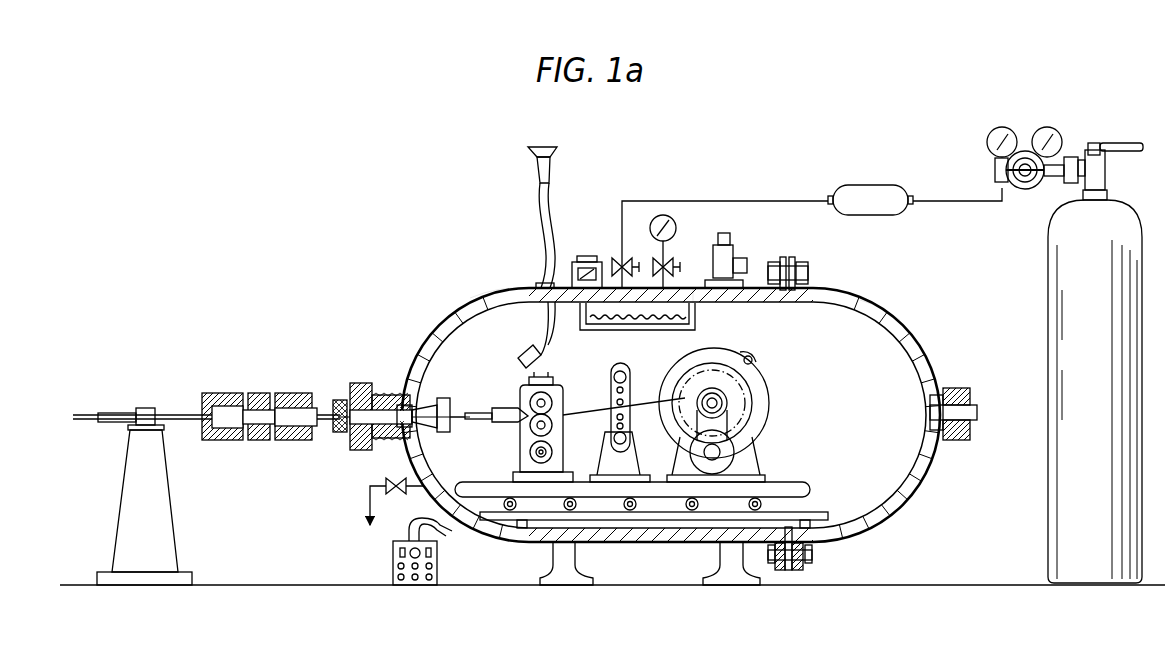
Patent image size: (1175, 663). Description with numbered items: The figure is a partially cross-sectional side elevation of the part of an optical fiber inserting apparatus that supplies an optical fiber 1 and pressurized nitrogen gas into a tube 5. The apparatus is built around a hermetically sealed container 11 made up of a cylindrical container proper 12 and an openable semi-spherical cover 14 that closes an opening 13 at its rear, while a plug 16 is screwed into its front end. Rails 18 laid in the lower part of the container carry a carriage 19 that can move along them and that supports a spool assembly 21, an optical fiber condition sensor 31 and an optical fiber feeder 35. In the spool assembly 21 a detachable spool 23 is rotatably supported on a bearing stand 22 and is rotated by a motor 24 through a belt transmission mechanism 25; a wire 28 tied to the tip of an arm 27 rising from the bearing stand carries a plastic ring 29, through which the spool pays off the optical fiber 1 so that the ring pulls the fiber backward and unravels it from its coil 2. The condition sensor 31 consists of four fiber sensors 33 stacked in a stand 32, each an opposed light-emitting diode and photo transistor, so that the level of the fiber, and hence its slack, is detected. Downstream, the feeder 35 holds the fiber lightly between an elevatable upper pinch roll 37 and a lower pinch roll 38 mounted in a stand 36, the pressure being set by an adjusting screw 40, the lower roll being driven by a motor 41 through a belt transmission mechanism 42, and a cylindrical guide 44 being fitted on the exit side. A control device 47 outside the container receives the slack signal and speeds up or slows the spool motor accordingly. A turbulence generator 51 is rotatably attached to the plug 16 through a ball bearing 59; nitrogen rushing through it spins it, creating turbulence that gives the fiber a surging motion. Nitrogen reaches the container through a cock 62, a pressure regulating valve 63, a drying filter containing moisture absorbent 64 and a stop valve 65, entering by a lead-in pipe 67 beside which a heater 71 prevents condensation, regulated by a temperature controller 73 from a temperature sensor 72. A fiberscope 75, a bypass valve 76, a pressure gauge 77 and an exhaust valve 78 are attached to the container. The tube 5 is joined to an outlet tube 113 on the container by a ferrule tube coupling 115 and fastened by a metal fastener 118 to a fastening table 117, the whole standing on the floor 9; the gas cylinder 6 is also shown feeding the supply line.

The optical fiber 1 is at (82, 413).
The coil 2 is at (680, 403).
The tube 5 is at (117, 414).
The gas cylinder 6 is at (1140, 287).
The floor 9 is at (533, 633).
The sealed container 11 is at (498, 285).
The cylindrical container proper 12 is at (470, 298).
The opening 13 is at (850, 480).
The semi-spherical cover 14 is at (860, 300).
The plug 16 is at (360, 383).
The rails 18 is at (683, 521).
The carriage 19 is at (800, 488).
The spool assembly 21 is at (735, 398).
The bearing stand 22 is at (690, 458).
The spool 23 is at (716, 388).
The motor 24 is at (736, 455).
The belt transmission mechanism 25 is at (748, 420).
The arm 27 is at (770, 412).
The wire 28 is at (752, 357).
The plastic ring 29 is at (700, 378).
The optical fiber condition sensor 31 is at (624, 362).
The stand 32 is at (610, 455).
The fiber sensors 33 is at (627, 380).
The optical fiber feeder 35 is at (563, 380).
The stand 36 is at (520, 452).
The upper pinch roll 37 is at (522, 390).
The lower pinch roll 38 is at (528, 431).
The adjusting screw 40 is at (532, 345).
The motor 41 is at (545, 478).
The belt transmission mechanism 42 is at (565, 436).
The cylindrical guide 44 is at (498, 412).
The control device 47 is at (437, 556).
The turbulence generator 51 is at (444, 409).
The ball bearing 59 is at (437, 405).
The cock 62 is at (1095, 145).
The pressure regulating valve 63 is at (1017, 190).
The drying filter containing moisture absorbent 64 is at (882, 184).
The stop valve 65 is at (622, 255).
The lead-in pipe 67 is at (693, 288).
The heater 71 is at (662, 330).
The temperature sensor 72 is at (690, 320).
The temperature controller 73 is at (587, 258).
The fiberscope 75 is at (553, 210).
The bypass valve 76 is at (731, 240).
The pressure gauge 77 is at (676, 228).
The exhaust valve 78 is at (396, 494).
The outlet tube 113 is at (323, 405).
The ferrule tube coupling 115 is at (262, 393).
The fastening table 117 is at (160, 505).
The metal fastener 118 is at (150, 408).